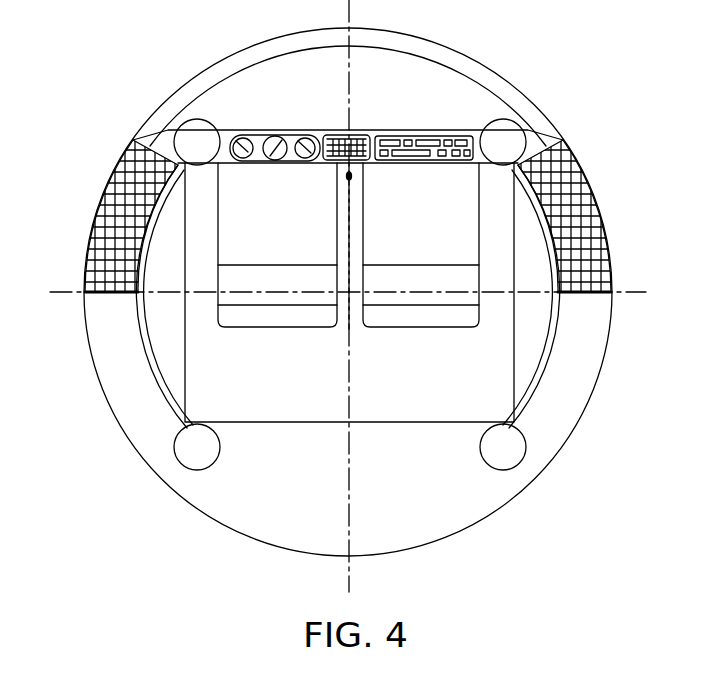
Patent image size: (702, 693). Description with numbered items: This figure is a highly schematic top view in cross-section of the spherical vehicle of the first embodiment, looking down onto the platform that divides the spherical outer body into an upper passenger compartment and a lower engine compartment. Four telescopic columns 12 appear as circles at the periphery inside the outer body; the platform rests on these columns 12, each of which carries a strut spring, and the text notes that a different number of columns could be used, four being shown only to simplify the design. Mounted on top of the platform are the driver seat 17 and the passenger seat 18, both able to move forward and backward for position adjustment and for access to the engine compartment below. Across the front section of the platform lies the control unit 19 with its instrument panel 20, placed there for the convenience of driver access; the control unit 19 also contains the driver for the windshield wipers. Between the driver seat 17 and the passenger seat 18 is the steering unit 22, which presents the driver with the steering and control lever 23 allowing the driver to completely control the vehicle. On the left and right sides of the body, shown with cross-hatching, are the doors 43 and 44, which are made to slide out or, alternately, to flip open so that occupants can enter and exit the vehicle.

The telescopic column 12 is at (197, 138).
The driver seat 17 is at (277, 245).
The passenger seat 18 is at (421, 245).
The control unit 19 is at (424, 117).
The instrument panel 20 is at (322, 136).
The steering unit 22 is at (353, 318).
The steering and control lever 23 is at (353, 179).
The door 43 is at (118, 210).
The door 44 is at (578, 208).